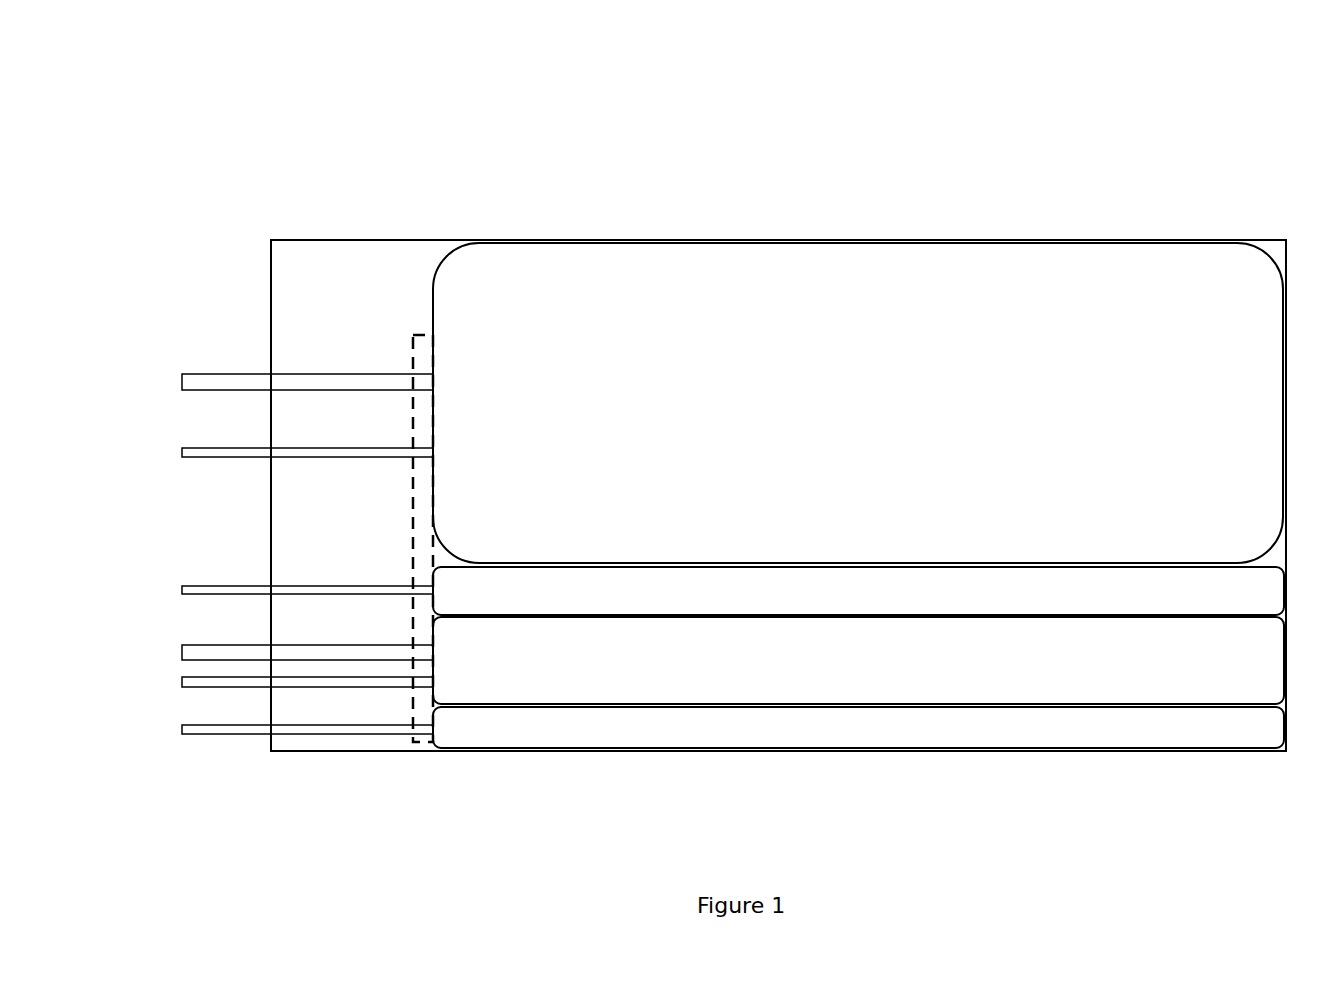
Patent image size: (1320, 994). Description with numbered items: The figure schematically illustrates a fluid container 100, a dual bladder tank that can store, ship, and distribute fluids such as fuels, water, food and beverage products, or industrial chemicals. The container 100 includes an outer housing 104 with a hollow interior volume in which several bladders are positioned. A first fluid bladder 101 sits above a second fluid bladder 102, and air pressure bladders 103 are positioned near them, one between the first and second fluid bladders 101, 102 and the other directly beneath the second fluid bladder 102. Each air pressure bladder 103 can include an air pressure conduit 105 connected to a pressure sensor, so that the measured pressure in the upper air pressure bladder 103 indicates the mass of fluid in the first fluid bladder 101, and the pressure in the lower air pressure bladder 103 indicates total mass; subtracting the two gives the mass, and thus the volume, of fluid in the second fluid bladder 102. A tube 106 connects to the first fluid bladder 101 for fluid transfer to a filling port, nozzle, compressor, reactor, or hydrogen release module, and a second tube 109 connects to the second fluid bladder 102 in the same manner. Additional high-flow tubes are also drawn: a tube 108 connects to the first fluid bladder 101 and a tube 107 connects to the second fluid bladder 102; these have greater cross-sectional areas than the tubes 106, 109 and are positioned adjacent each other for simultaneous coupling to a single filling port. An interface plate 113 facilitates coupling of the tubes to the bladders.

The fluid container 100 is at (734, 408).
The first fluid bladder 101 is at (858, 403).
The second fluid bladder 102 is at (858, 660).
The air pressure bladder 103 is at (858, 657).
The outer housing 104 is at (778, 464).
The air pressure conduit 105 is at (307, 661).
The tube 106 is at (307, 432).
The tube 107 is at (307, 643).
The tube 108 is at (307, 352).
The second tube 109 is at (391, 562).
The interface plate 113 is at (360, 288).